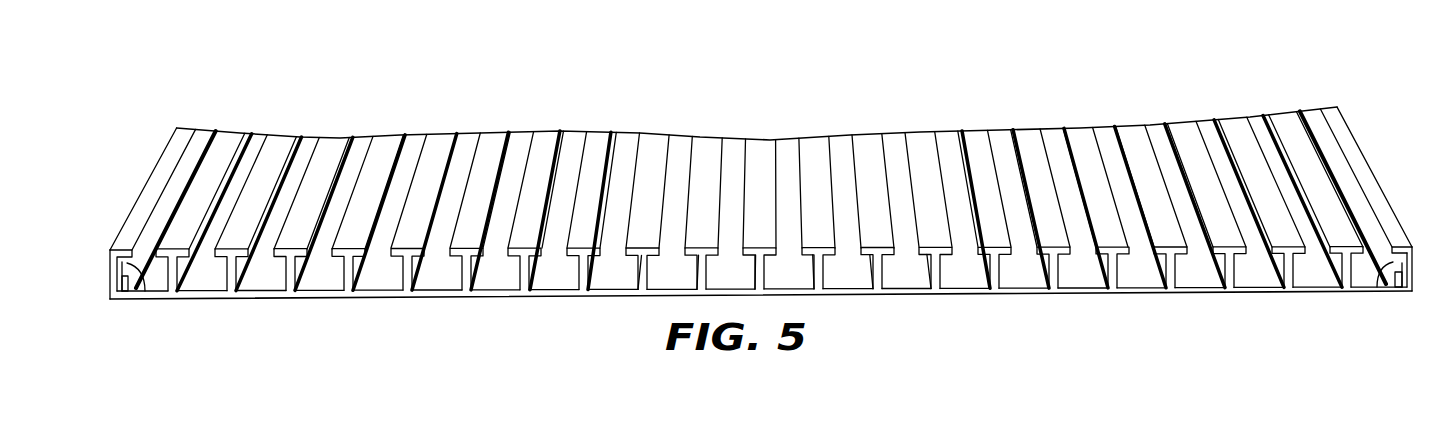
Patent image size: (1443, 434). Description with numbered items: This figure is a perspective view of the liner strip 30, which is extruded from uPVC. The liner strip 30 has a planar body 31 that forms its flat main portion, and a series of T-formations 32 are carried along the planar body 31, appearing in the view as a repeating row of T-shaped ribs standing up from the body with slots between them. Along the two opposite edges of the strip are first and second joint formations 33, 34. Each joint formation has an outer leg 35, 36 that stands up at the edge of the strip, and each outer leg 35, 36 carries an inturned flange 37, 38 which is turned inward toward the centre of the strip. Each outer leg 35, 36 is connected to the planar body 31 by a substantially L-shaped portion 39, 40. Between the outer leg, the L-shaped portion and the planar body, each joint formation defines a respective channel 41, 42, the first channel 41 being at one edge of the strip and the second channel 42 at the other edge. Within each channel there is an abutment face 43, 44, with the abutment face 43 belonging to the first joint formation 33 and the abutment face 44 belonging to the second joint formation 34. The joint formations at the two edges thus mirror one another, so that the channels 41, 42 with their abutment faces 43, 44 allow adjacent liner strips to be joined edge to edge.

The liner strip 30 is at (1373, 113).
The planar body 31 is at (1223, 297).
The T-formations 32 is at (1120, 272).
The first joint formation 33 is at (120, 348).
The second joint formation 34 is at (1416, 279).
The outer leg 35 is at (112, 255).
The outer leg 36 is at (1411, 245).
The inturned flange 37 is at (142, 210).
The inturned flange 38 is at (1370, 188).
The L-shaped portion 39 is at (160, 295).
The L-shaped portion 40 is at (1380, 287).
The channel 41 is at (112, 300).
The channel 42 is at (1395, 293).
The abutment face 43 is at (132, 303).
The abutment face 44 is at (1396, 264).